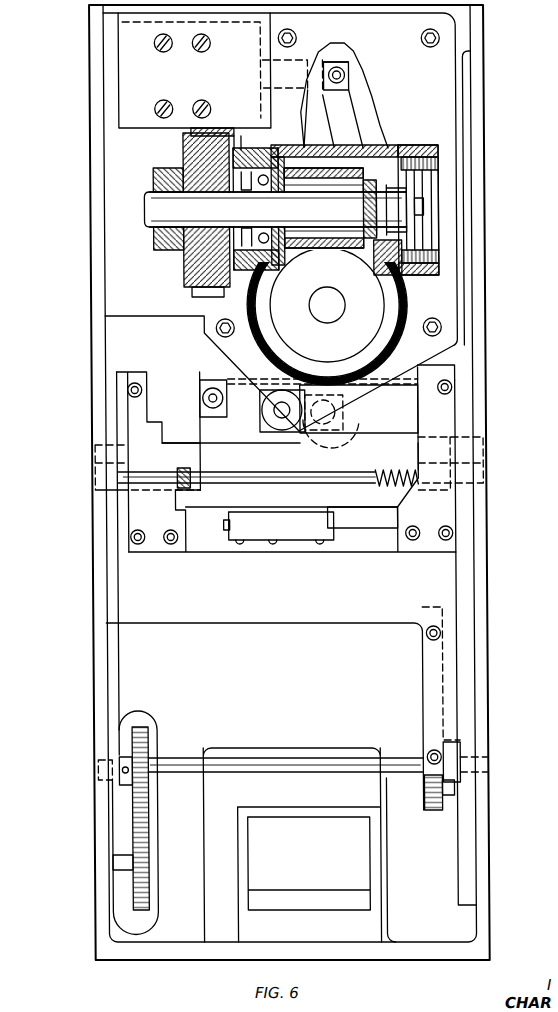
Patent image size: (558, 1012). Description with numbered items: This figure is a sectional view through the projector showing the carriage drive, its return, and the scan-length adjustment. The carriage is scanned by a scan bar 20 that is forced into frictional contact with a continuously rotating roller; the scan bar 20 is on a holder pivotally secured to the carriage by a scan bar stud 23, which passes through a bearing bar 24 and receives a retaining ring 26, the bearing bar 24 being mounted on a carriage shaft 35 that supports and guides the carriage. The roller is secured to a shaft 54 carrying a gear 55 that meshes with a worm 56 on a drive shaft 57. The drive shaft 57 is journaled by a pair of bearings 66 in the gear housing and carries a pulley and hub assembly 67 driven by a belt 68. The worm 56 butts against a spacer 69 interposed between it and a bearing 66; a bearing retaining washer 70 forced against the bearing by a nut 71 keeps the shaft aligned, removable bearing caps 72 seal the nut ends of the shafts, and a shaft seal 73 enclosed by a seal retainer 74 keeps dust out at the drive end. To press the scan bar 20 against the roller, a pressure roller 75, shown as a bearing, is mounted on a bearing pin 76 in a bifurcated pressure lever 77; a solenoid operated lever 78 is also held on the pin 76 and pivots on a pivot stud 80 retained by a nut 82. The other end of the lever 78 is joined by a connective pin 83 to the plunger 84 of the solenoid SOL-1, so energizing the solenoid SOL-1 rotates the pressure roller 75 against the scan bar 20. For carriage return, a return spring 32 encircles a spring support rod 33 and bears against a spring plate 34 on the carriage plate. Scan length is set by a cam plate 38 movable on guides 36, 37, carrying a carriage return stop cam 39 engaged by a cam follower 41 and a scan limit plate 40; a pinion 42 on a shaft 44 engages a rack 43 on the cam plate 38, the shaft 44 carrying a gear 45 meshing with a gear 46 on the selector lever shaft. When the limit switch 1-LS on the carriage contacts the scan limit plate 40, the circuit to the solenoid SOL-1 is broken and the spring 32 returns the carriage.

The solenoid SOL-1 is at (125, 72).
The plunger 84 is at (328, 63).
The solenoid operated lever 78 is at (318, 112).
The connective pin 83 is at (336, 90).
The bearings 66 is at (366, 148).
The worm 56 is at (333, 148).
The shaft seal 73 is at (238, 130).
The drive shaft 57 is at (143, 208).
The pulley and hub assembly 67 is at (182, 271).
The belt 68 is at (190, 294).
The seal retainer 74 is at (243, 290).
The spacer 69 is at (362, 193).
The bearing retaining washer 70 is at (410, 192).
The nut 71 is at (421, 210).
The bearing caps 72 is at (437, 258).
The shaft 54 is at (343, 300).
The gear 55 is at (388, 315).
The scan bar 20 is at (288, 222).
The carriage return stop cam 39 is at (443, 364).
The retaining ring 26 is at (212, 390).
The scan bar stud 23 is at (203, 390).
The bearing bar 24 is at (200, 405).
The scan limit plate 40 is at (147, 413).
The carriage shaft 35 is at (167, 448).
The nut 82 is at (267, 404).
The pivot stud 80 is at (263, 422).
The pressure roller 75 is at (346, 408).
The pressure lever 77 is at (350, 422).
The bearing pin 76 is at (328, 446).
The spring plate 34 is at (450, 463).
The spring support rod 33 is at (106, 492).
The return spring 32 is at (174, 496).
The limit switch 1-LS is at (228, 540).
The cam follower 41 is at (324, 518).
The guide 37 is at (114, 583).
The guide 36 is at (452, 580).
The rack 43 is at (420, 617).
The cam plate 38 is at (262, 625).
The gear 45 is at (146, 760).
The shaft 44 is at (401, 765).
The pinion 42 is at (419, 802).
The gear 46 is at (143, 836).